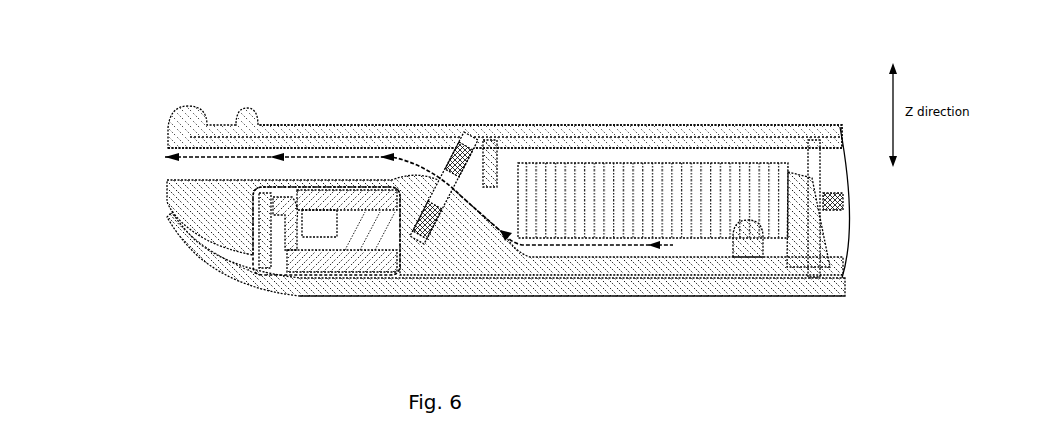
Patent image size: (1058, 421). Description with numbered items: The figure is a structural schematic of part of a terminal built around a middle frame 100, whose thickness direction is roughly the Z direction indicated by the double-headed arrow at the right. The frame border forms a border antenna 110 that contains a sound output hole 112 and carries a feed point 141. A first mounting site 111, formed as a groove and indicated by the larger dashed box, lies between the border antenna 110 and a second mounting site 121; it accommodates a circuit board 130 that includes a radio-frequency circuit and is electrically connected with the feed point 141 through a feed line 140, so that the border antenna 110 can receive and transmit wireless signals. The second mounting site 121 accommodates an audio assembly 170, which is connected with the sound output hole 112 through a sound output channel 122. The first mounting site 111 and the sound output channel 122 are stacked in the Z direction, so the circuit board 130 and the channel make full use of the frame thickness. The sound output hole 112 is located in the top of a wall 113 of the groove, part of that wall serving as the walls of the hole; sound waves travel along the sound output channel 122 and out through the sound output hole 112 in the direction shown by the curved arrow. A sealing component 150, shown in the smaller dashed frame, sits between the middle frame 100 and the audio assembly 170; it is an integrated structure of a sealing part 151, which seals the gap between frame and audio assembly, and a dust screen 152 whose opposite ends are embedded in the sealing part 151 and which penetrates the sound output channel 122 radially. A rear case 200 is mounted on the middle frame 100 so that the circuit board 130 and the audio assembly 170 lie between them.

The middle frame 100 is at (268, 122).
The border antenna 110 is at (202, 232).
The first mounting site 111 is at (313, 183).
The sound output hole 112 is at (180, 167).
The wall 113 is at (289, 185).
The second mounting site 121 is at (802, 158).
The sound output channel 122 is at (600, 237).
The circuit board 130 is at (407, 279).
The feed line 140 is at (315, 250).
The feed point 141 is at (259, 255).
The sealing component 150 is at (482, 138).
The sealing part 151 is at (437, 198).
The dust screen 152 is at (436, 172).
The audio assembly 170 is at (697, 170).
The rear case 200 is at (553, 290).